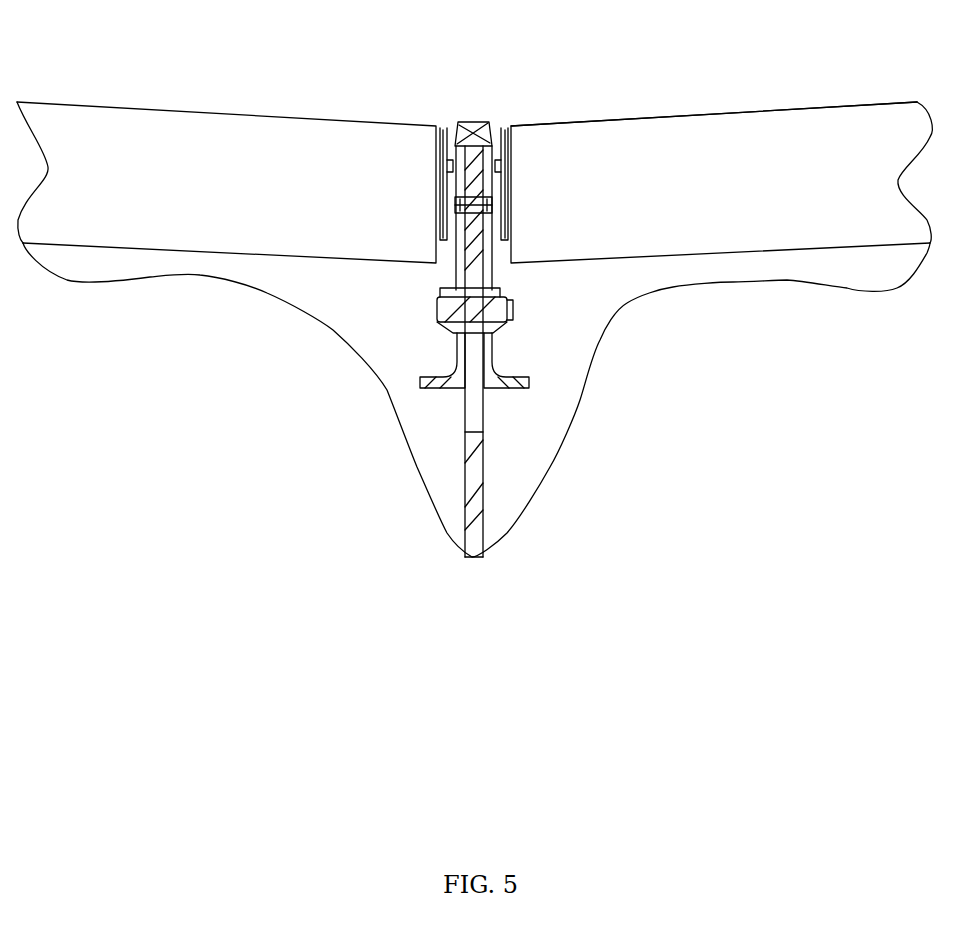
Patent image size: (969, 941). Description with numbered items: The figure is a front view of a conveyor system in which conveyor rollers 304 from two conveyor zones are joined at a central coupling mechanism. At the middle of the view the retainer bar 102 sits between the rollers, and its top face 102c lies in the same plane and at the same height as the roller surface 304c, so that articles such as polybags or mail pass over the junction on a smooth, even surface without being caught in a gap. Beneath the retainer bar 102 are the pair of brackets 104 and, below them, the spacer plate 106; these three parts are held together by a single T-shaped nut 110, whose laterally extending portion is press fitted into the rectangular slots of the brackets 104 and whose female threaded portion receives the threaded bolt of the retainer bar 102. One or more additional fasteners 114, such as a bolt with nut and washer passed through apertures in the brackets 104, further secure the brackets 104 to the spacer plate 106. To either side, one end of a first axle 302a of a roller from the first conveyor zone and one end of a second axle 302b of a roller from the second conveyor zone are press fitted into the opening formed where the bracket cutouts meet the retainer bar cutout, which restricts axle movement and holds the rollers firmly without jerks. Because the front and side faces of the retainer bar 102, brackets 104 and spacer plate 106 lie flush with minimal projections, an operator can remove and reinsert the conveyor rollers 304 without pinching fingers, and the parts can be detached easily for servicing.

The conveyor roller 304 is at (242, 123).
The panel top surface 304c is at (657, 110).
The retainer bar 102 is at (442, 151).
The top face of the retainer bar 102c is at (470, 125).
The T-shaped nut 110 is at (470, 210).
The first axle 302a is at (455, 210).
The second axle 302b is at (512, 208).
The fastener 114 is at (497, 307).
The bracket 104 is at (487, 350).
The spacer plate 106 is at (470, 423).